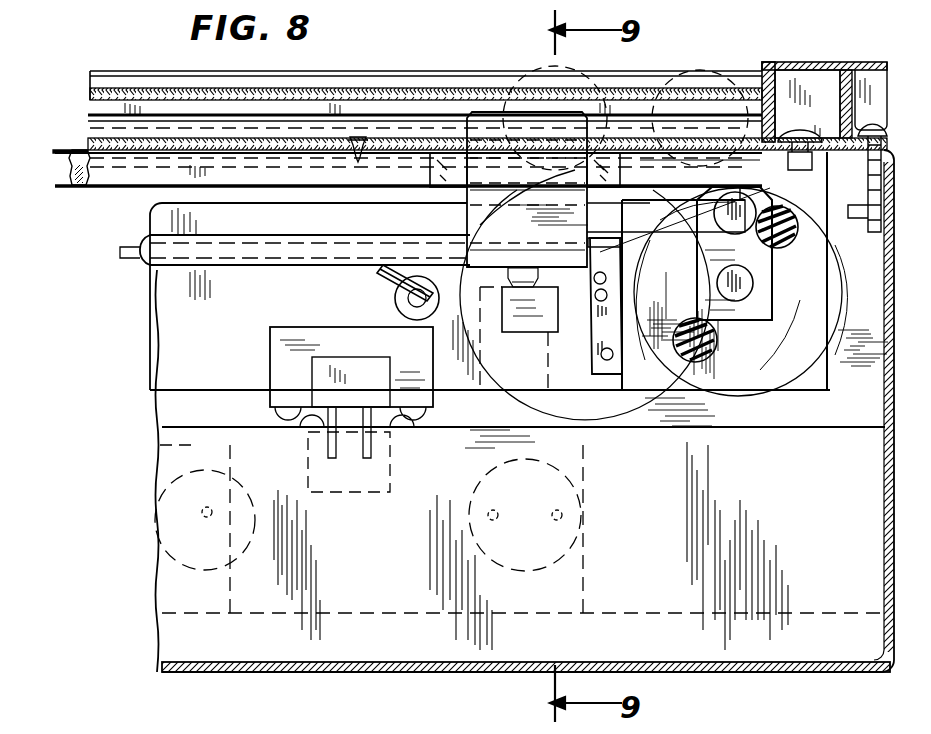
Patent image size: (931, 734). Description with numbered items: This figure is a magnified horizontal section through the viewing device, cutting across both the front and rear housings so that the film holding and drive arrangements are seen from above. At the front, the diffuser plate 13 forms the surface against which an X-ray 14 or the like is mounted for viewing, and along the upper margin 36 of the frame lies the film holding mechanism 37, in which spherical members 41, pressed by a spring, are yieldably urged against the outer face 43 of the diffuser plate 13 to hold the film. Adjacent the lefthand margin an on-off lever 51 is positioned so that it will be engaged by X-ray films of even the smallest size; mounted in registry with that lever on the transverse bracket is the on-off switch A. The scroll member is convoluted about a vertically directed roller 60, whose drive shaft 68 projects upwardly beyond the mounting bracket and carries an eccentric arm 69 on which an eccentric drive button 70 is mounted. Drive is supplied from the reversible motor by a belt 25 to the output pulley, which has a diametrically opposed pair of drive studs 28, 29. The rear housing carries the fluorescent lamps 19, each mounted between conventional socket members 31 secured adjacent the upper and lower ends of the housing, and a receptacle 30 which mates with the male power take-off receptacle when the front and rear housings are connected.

The upper margin 36 is at (138, 82).
The film holding mechanism 37 is at (60, 136).
The X-ray 14 is at (80, 150).
The on-off lever 51 is at (505, 150).
The spherical members 41 is at (718, 80).
The outer face 43 is at (675, 158).
The diffuser plate 13 is at (740, 160).
The on-off switch A is at (538, 328).
The belt 25 is at (620, 356).
The roller 60 is at (830, 320).
The drive shaft 68 is at (762, 322).
The eccentric drive button 70 is at (722, 211).
The drive stud 29 is at (800, 220).
The eccentric arm 69 is at (765, 276).
The drive stud 28 is at (715, 346).
The receptacle 30 is at (370, 407).
The fluorescent lamps 19 is at (190, 458).
The socket members 31 is at (225, 574).